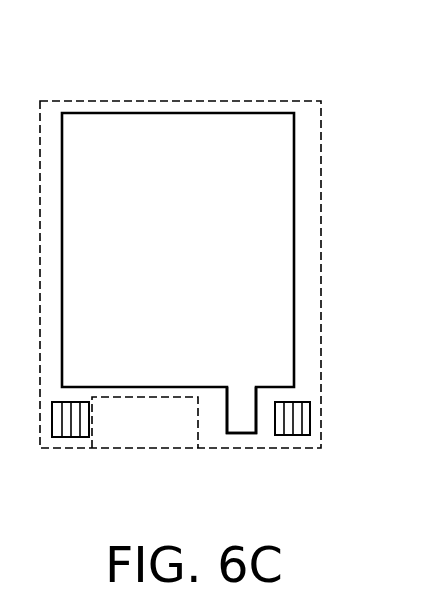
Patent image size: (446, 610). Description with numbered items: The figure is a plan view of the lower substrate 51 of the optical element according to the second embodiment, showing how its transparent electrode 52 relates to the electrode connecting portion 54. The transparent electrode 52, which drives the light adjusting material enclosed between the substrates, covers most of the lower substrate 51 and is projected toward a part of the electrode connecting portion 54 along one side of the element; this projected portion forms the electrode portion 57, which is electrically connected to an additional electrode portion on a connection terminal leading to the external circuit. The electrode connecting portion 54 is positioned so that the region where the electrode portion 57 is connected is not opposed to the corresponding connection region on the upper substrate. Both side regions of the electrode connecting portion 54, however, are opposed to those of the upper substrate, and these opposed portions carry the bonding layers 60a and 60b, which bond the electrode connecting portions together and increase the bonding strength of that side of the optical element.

The lower substrate 51 is at (321, 223).
The transparent electrode 52 is at (243, 113).
The electrode connecting portion 54 is at (92, 450).
The electrode portion 57 is at (240, 423).
The bonding layer 60a is at (287, 427).
The bonding layer 60b is at (67, 430).